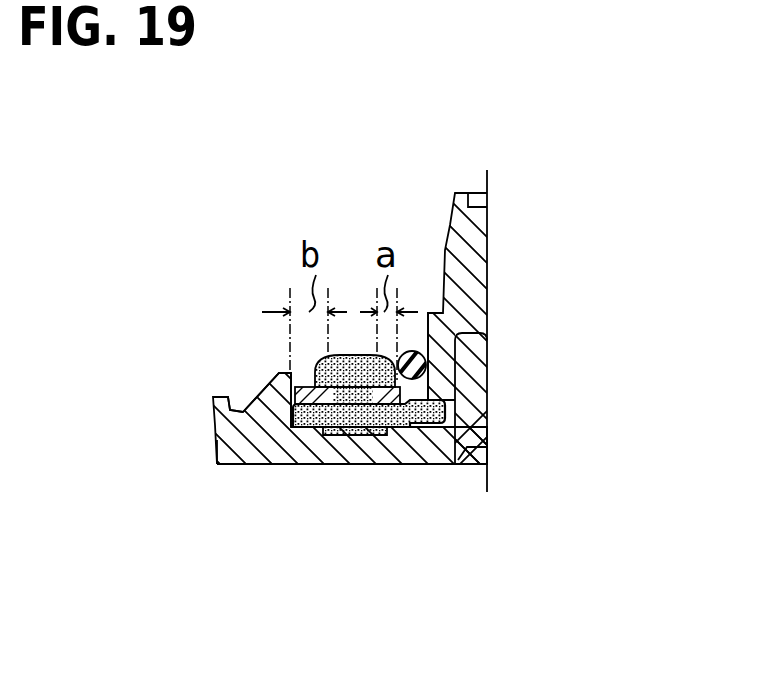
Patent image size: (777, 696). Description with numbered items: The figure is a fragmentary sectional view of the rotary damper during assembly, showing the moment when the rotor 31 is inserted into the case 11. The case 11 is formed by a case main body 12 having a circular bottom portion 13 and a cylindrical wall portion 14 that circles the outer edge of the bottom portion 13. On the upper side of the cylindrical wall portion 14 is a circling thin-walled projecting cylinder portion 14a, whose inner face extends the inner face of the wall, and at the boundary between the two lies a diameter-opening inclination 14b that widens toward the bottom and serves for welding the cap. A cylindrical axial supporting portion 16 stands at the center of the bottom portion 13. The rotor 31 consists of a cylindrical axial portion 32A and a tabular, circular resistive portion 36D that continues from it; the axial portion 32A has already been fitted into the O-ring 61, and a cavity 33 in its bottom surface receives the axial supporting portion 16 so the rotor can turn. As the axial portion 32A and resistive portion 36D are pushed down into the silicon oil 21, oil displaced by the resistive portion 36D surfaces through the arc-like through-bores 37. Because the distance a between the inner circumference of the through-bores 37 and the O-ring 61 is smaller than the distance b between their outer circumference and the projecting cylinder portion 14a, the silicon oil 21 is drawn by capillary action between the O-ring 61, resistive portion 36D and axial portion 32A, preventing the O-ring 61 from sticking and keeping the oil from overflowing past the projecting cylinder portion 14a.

The case 11 is at (228, 536).
The case main body 12 is at (227, 481).
The bottom portion 13 is at (318, 430).
The cylindrical wall portion 14 is at (264, 415).
The thin-walled projecting cylinder portion 14a is at (270, 370).
The diameter-opening inclination 14b is at (253, 398).
The axial supporting portion 16 is at (475, 412).
The silicon oil 21 is at (348, 387).
The rotor 31 is at (504, 276).
The axial portion 32A is at (428, 372).
The cavity 33 is at (478, 343).
The resistive portion 36D is at (400, 423).
The arc-like through-bores 37 is at (370, 407).
The O-ring 61 is at (493, 447).